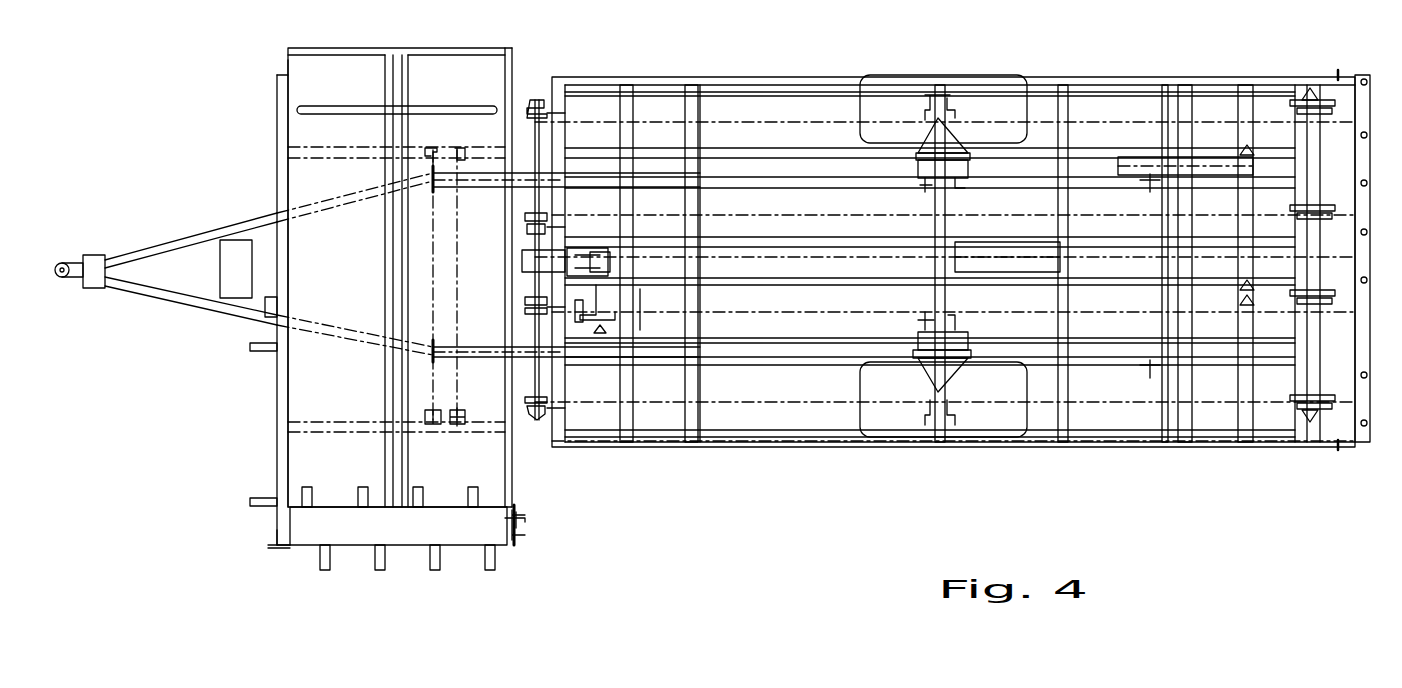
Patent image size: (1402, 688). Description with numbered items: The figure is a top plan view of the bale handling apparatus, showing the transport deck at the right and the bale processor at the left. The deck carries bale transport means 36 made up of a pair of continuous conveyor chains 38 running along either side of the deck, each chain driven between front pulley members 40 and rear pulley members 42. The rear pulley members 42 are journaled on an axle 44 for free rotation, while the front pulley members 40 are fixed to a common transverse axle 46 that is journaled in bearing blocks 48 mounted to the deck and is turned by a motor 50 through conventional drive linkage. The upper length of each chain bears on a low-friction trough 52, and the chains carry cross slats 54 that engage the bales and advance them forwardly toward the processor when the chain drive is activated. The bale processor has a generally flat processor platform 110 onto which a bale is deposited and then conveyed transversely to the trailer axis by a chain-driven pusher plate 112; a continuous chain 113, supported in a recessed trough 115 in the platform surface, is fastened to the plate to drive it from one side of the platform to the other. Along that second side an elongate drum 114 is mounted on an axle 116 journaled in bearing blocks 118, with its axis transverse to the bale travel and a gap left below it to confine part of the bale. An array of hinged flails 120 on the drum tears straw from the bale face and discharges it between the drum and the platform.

The bale transport means 36 is at (836, 360).
The conveyor chains 38 is at (788, 150).
The front pulley members 40 is at (448, 182).
The rear pulley members 42 is at (1240, 350).
The axle 44 is at (1250, 408).
The transverse axle 46 is at (446, 388).
The bearing blocks 48 is at (452, 426).
The motor 50 is at (598, 368).
The trough 52 is at (672, 360).
The cross slats 54 is at (755, 155).
The processor platform 110 is at (345, 392).
The pusher plate 112 is at (320, 106).
The continuous chain 113 is at (400, 132).
The elongate drum 114 is at (470, 537).
The recessed trough 115 is at (388, 127).
The axle 116 is at (525, 537).
The bearing blocks 118 is at (275, 548).
The hinged flails 120 is at (426, 566).